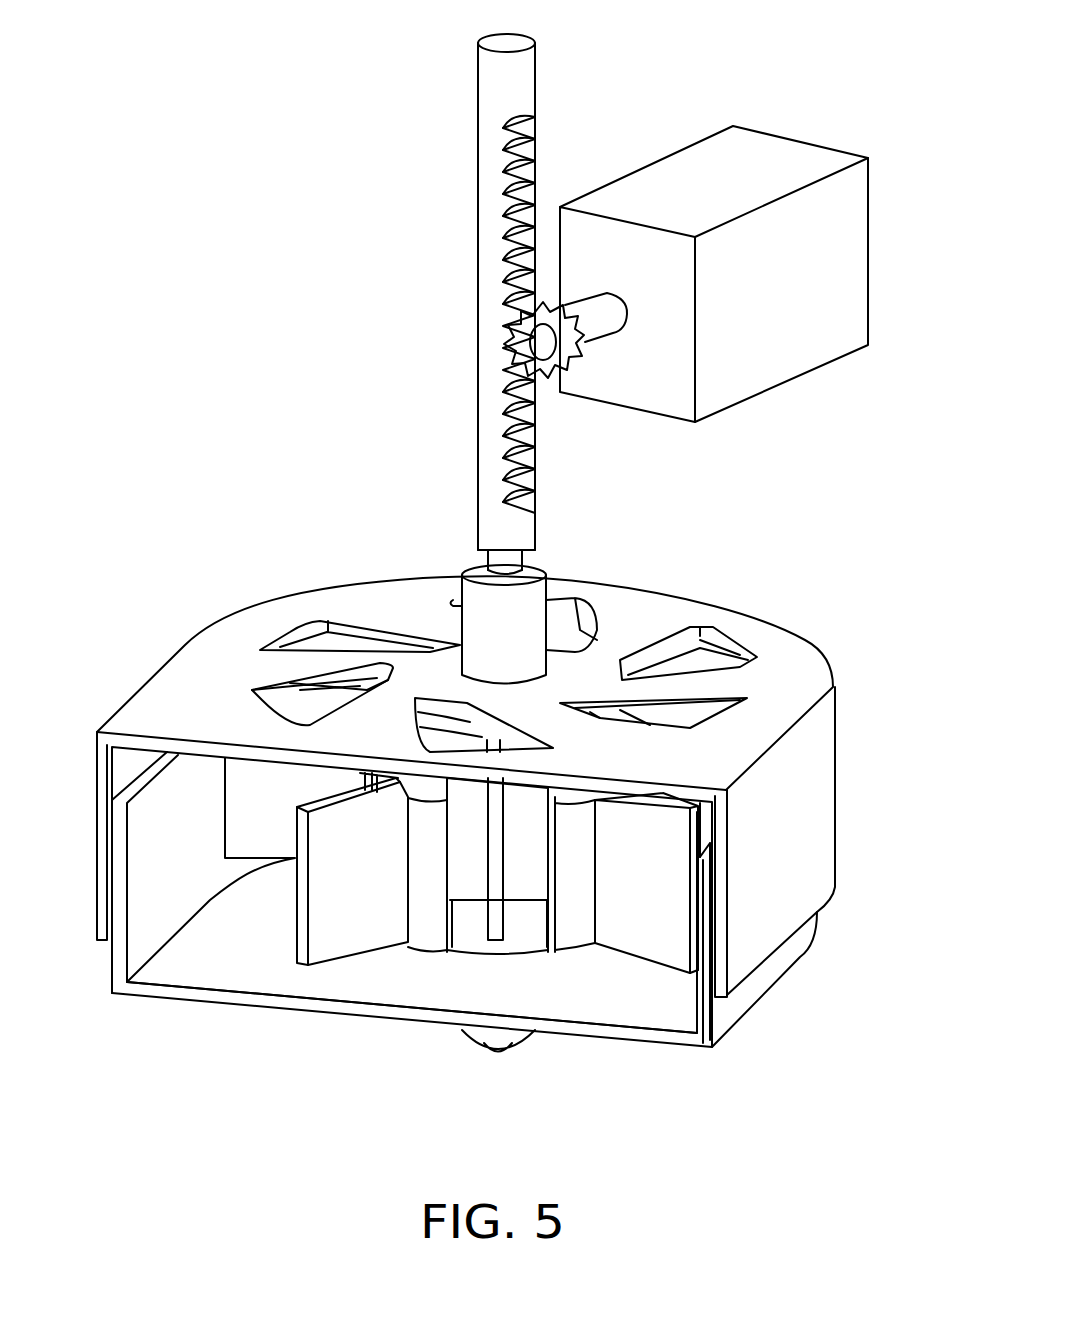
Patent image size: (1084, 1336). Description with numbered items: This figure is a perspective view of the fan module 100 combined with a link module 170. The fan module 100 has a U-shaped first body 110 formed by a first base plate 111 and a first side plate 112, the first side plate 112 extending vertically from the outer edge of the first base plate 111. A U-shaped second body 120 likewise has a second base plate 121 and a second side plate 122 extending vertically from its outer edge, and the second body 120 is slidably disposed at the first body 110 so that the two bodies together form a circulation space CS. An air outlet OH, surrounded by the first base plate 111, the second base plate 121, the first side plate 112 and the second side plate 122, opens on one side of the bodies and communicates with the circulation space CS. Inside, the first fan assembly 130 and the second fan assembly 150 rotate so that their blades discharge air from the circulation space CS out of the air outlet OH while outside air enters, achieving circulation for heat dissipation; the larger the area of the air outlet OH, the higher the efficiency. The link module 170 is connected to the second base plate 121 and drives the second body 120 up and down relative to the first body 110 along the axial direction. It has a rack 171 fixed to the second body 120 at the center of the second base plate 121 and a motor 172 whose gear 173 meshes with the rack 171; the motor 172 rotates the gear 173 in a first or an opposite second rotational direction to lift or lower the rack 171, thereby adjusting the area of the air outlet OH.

The fan module 100 is at (893, 1163).
The first body 110 is at (755, 1118).
The first base plate 111 is at (653, 1035).
The first side plate 112 is at (727, 1010).
The second body 120 is at (905, 632).
The second base plate 121 is at (800, 680).
The second side plate 122 is at (813, 740).
The first fan assembly 130 is at (433, 917).
The second fan assembly 150 is at (527, 883).
The link module 170 is at (485, 405).
The rack 171 is at (506, 304).
The motor 172 is at (862, 270).
The gear 173 is at (558, 372).
The circulation space CS is at (152, 872).
The air outlet OH is at (222, 993).